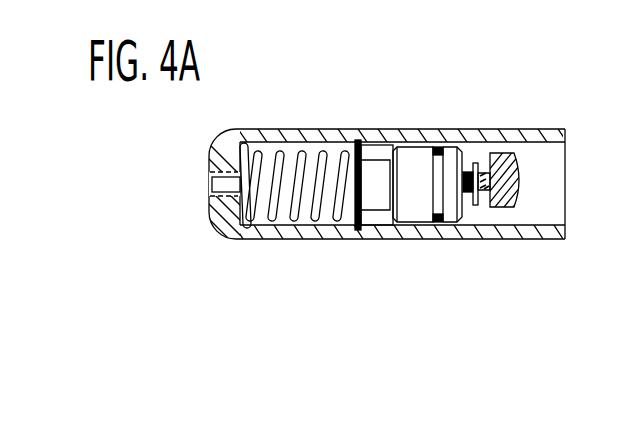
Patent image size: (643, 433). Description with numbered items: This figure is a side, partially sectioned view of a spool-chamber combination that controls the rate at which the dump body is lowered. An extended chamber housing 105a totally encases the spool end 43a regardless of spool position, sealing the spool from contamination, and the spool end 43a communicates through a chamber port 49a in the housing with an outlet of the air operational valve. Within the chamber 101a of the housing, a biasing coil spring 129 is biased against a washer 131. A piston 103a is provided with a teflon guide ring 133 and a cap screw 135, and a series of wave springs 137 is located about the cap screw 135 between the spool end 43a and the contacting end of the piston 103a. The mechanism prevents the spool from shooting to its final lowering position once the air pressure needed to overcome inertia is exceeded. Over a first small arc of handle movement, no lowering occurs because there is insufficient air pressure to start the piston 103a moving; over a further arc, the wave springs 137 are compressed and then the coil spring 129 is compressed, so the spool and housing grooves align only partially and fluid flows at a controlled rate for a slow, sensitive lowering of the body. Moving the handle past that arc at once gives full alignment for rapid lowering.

The chamber 101a is at (272, 153).
The washer 131 is at (359, 140).
The teflon guide ring 133 is at (437, 146).
The cap screw 135 is at (483, 172).
The spool end 43a is at (510, 153).
The chamber port 49a is at (211, 185).
The extended chamber housing 105a is at (212, 228).
The biasing coil spring 129 is at (270, 223).
The piston 103a is at (422, 226).
The wave springs 137 is at (468, 203).